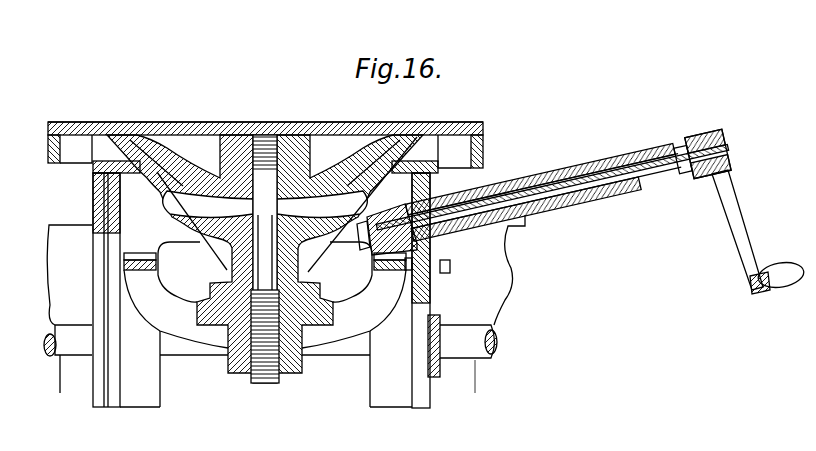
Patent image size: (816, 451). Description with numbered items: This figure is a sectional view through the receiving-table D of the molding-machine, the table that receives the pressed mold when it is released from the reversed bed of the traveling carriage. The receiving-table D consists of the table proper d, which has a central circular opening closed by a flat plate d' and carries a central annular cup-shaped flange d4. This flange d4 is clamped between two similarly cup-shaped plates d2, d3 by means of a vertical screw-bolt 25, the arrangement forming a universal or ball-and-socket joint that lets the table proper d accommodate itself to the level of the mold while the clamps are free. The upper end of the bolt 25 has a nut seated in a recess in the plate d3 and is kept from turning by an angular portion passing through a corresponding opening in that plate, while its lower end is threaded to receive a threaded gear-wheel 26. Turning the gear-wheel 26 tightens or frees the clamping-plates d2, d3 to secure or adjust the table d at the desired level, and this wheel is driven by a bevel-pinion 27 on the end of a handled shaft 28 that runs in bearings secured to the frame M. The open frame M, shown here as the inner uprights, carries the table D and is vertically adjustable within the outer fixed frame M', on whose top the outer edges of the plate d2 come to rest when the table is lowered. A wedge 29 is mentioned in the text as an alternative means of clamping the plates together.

The receiving-table D is at (265, 118).
The flat plate d' is at (265, 114).
The table proper d is at (262, 149).
The central annular cup-shaped flange d4 is at (264, 157).
The cup-shaped clamping-plate d3 is at (265, 254).
The cup-shaped clamping-plate d2 is at (287, 219).
The screw-bolt 25 is at (264, 272).
The threaded gear-wheel 26 is at (265, 300).
The bevel-pinion 27 is at (387, 227).
The handled shaft 28 is at (739, 211).
The wedge 29 is at (588, 189).
The open frame M is at (271, 290).
The outer fixed frame M' is at (284, 304).